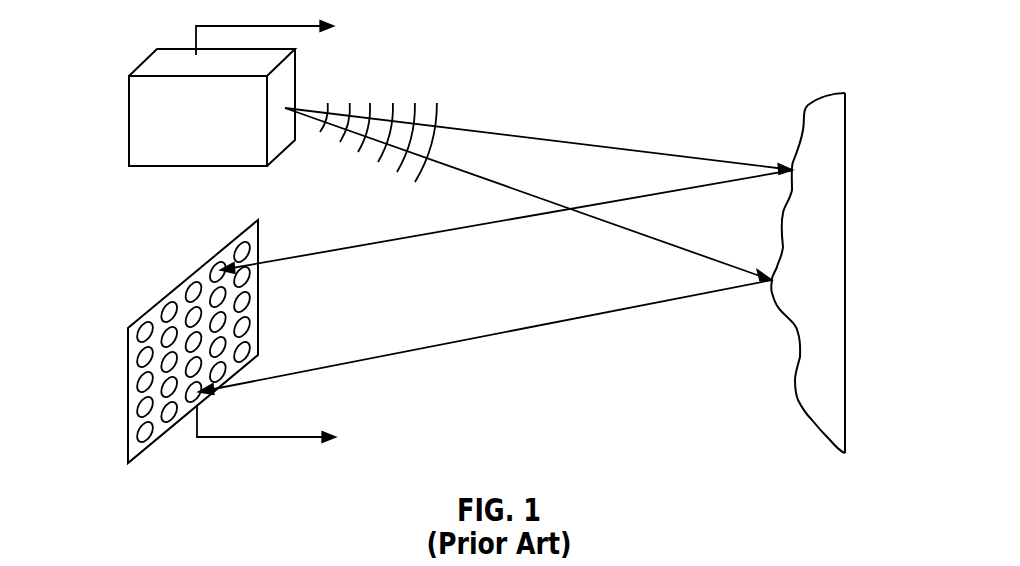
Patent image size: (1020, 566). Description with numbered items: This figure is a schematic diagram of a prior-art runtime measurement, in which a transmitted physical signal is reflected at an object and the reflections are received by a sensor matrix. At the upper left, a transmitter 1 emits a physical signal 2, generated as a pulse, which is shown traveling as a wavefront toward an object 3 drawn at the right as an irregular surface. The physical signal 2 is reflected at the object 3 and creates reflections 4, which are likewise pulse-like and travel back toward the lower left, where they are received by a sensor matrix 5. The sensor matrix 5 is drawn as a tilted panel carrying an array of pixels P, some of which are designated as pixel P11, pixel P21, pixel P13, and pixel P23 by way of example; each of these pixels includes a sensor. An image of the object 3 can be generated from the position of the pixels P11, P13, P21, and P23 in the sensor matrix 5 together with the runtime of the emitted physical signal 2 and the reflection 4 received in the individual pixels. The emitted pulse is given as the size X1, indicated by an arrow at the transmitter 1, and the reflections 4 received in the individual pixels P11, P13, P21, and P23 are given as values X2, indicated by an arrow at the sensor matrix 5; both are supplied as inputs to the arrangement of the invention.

The transmitter 1 is at (182, 63).
The physical signal 2 is at (515, 132).
The object 3 is at (838, 267).
The reflections 4 is at (560, 322).
The sensor matrix 5 is at (258, 275).
The pixel array P is at (268, 343).
The pixel P11 is at (147, 326).
The pixel P21 is at (170, 300).
The pixel P13 is at (143, 380).
The pixel P23 is at (163, 363).
The size X1 is at (284, 34).
The values X2 is at (286, 436).